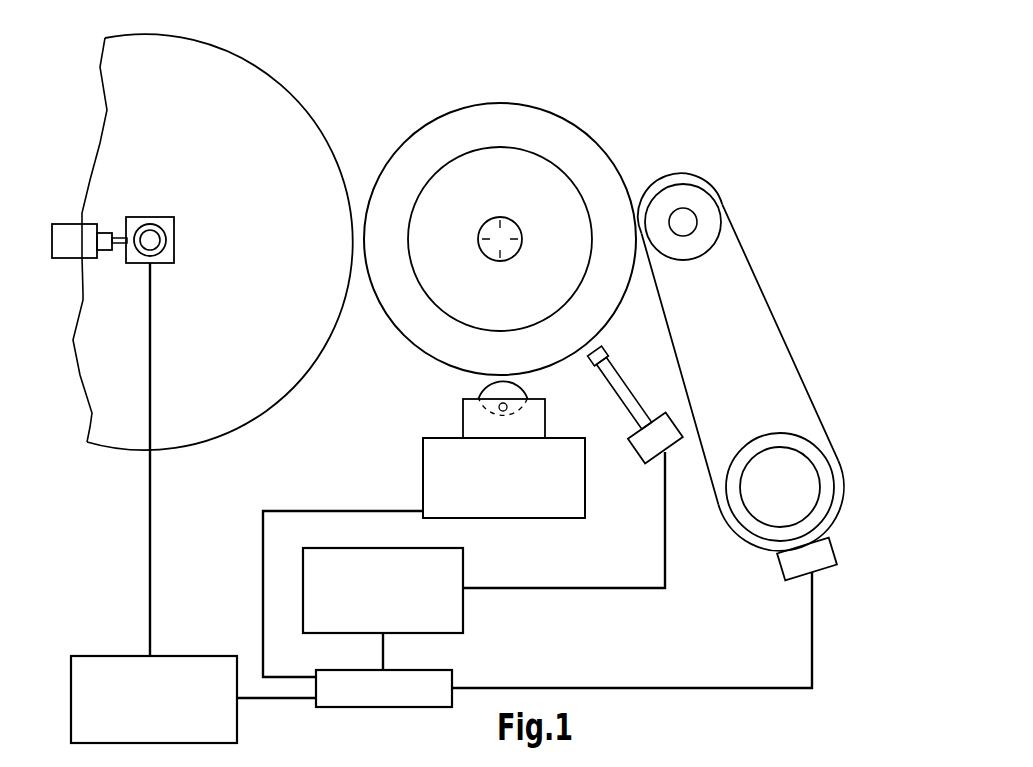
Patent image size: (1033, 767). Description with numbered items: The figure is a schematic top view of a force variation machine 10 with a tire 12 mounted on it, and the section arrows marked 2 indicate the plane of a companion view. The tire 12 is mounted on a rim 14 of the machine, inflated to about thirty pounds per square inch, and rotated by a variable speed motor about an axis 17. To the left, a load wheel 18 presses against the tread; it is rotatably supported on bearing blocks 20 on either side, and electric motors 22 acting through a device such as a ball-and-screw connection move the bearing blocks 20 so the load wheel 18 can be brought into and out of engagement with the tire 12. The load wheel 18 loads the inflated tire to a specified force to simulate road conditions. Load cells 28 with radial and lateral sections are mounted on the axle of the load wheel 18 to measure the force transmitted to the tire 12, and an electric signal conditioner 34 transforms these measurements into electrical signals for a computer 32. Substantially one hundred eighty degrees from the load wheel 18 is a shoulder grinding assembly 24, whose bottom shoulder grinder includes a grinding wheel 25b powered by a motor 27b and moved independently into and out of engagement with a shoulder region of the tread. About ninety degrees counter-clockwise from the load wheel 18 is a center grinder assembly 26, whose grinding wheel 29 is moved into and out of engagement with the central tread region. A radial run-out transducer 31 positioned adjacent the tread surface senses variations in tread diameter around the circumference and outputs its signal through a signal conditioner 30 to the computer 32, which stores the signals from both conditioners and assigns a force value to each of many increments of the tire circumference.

The force variation machine 10 is at (501, 85).
The tire 12 is at (553, 112).
The rim 14 is at (547, 157).
The axis 17 is at (500, 239).
The load wheel 18 is at (253, 58).
The bearing blocks 20 is at (140, 222).
The electric motors 22 is at (68, 243).
The shoulder grinding assembly 24 is at (790, 298).
The grinding wheel 25b is at (720, 206).
The center grinder assembly 26 is at (408, 437).
The motor 27b is at (787, 480).
The load cells 28 is at (163, 212).
The grinding wheel 29 is at (484, 394).
The signal conditioner 30 is at (465, 572).
The radial run-out transducer 31 is at (634, 450).
The computer 32 is at (453, 679).
The electric signal conditioner 34 is at (78, 655).
The section line 2 is at (257, 432).